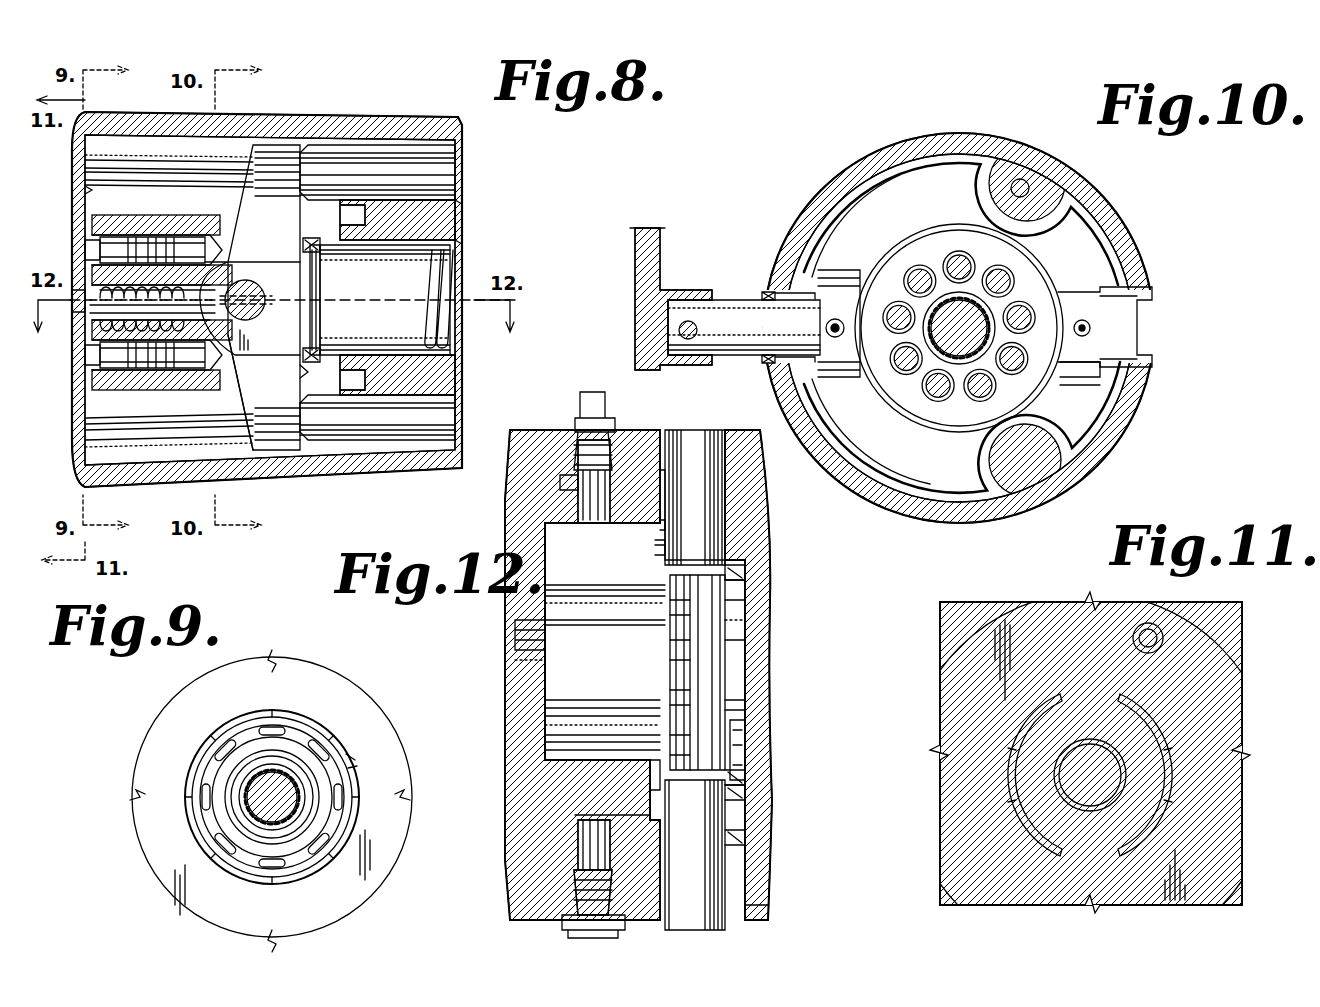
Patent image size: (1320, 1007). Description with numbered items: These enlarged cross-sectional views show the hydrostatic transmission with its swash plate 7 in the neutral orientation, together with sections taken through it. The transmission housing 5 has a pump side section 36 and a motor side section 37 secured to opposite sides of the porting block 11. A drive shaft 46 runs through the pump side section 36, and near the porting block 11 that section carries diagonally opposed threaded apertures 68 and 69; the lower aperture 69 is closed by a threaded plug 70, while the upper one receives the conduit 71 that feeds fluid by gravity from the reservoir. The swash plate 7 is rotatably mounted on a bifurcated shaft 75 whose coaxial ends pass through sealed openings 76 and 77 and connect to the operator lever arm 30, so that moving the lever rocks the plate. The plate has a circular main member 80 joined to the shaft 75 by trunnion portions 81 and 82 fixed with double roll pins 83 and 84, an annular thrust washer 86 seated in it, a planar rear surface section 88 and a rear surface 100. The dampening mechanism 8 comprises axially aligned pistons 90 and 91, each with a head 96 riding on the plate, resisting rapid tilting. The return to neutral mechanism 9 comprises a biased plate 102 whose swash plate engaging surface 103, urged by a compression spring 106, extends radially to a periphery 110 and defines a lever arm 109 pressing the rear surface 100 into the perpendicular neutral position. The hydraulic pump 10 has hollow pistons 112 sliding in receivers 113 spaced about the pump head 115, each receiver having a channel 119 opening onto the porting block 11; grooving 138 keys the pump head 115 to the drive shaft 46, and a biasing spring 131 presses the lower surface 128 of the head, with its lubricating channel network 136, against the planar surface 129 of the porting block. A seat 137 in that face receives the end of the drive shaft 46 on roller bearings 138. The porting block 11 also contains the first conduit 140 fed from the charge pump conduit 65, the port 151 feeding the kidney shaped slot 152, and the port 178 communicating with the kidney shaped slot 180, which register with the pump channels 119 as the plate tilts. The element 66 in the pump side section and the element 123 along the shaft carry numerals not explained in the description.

In FIG. 8, the transmission housing 5 is at (388, 118).
In FIG. 8, the swash plate 7 is at (256, 440).
In FIG. 10, the swash plate 7 is at (946, 486).
In FIG. 12, the swash plate 7 is at (752, 577).
In FIG. 9, the swash plate 7 is at (355, 900).
In FIG. 8, the dampening mechanism 8 is at (455, 158).
In FIG. 8, the return to neutral mechanism 9 is at (378, 246).
In FIG. 8, the hydraulic pump 10 is at (204, 388).
In FIG. 10, the hydraulic pump 10 is at (1029, 262).
In FIG. 12, the hydraulic pump 10 is at (610, 770).
In FIG. 9, the hydraulic pump 10 is at (334, 733).
In FIG. 8, the porting block 11 is at (76, 470).
In FIG. 12, the porting block 11 is at (512, 801).
In FIG. 11, the porting block 11 is at (1240, 645).
In FIG. 10, the operator lever arm 30 is at (655, 262).
In FIG. 8, the pump side section 36 is at (262, 118).
In FIG. 12, the pump side section 36 is at (768, 905).
In FIG. 10, the motor side section 37 is at (1140, 247).
In FIG. 8, the drive shaft 46 is at (420, 285).
In FIG. 10, the drive shaft 46 is at (988, 336).
In FIG. 9, the drive shaft 46 is at (272, 797).
In FIG. 11, the drive shaft 46 is at (1100, 790).
In FIG. 10, the charge pump conduit 65 is at (1010, 193).
In FIG. 8, the chamber 66 is at (137, 145).
In FIG. 12, the threaded aperture 68 is at (576, 486).
In FIG. 12, the threaded aperture 69 is at (608, 842).
In FIG. 12, the threaded plug 70 is at (626, 925).
In FIG. 12, the conduit 71 is at (610, 408).
In FIG. 8, the bifurcated shaft 75 is at (246, 283).
In FIG. 10, the bifurcated shaft 75 is at (742, 306).
In FIG. 12, the bifurcated shaft 75 is at (736, 924).
In FIG. 10, the sealed opening 76 is at (764, 360).
In FIG. 12, the sealed opening 76 is at (726, 838).
In FIG. 10, the sealed opening 77 is at (1150, 322).
In FIG. 12, the sealed opening 77 is at (663, 507).
In FIG. 12, the main member 80 is at (760, 742).
In FIG. 10, the trunnion portion 81 is at (1080, 375).
In FIG. 10, the trunnion portion 82 is at (850, 280).
In FIG. 10, the double roll pin 83 is at (1080, 318).
In FIG. 12, the double roll pin 83 is at (655, 546).
In FIG. 10, the double roll pin 84 is at (833, 340).
In FIG. 12, the annular thrust washer 86 is at (670, 667).
In FIG. 8, the rear surface section 88 is at (303, 246).
In FIG. 8, the piston 90 is at (455, 387).
In FIG. 8, the piston 91 is at (455, 210).
In FIG. 8, the head 96 is at (295, 160).
In FIG. 12, the head 96 is at (608, 590).
In FIG. 8, the rear surface 100 is at (302, 384).
In FIG. 12, the rear surface 100 is at (748, 792).
In FIG. 12, the biased plate 102 is at (746, 605).
In FIG. 8, the swash plate engaging surface 103 is at (311, 258).
In FIG. 12, the swash plate engaging surface 103 is at (748, 770).
In FIG. 8, the compression spring 106 is at (440, 250).
In FIG. 8, the lever arm 109 is at (250, 308).
In FIG. 8, the periphery 110 is at (310, 363).
In FIG. 8, the piston 112 is at (148, 240).
In FIG. 10, the piston 112 is at (978, 398).
In FIG. 8, the receiver 113 is at (125, 377).
In FIG. 8, the pump head 115 is at (180, 232).
In FIG. 12, the pump head 115 is at (645, 765).
In FIG. 8, the channel 119 is at (92, 246).
In FIG. 9, the channel 119 is at (228, 742).
In FIG. 12, the spline 123 is at (668, 692).
In FIG. 12, the lower surface 128 is at (520, 718).
In FIG. 9, the lower surface 128 is at (290, 728).
In FIG. 8, the planar surface 129 is at (85, 190).
In FIG. 12, the planar surface 129 is at (545, 712).
In FIG. 11, the planar surface 129 is at (940, 859).
In FIG. 8, the biasing spring 131 is at (152, 309).
In FIG. 9, the channel network 136 is at (345, 760).
In FIG. 12, the seat 137 is at (545, 655).
In FIG. 8, the roller bearings 138 is at (85, 308).
In FIG. 11, the roller bearings 138 is at (1108, 748).
In FIG. 11, the first conduit 140 is at (1133, 638).
In FIG. 11, the port 151 is at (1175, 775).
In FIG. 11, the kidney shaped slot 152 is at (1148, 720).
In FIG. 11, the port 178 is at (1009, 768).
In FIG. 11, the kidney shaped slot 180 is at (1032, 833).